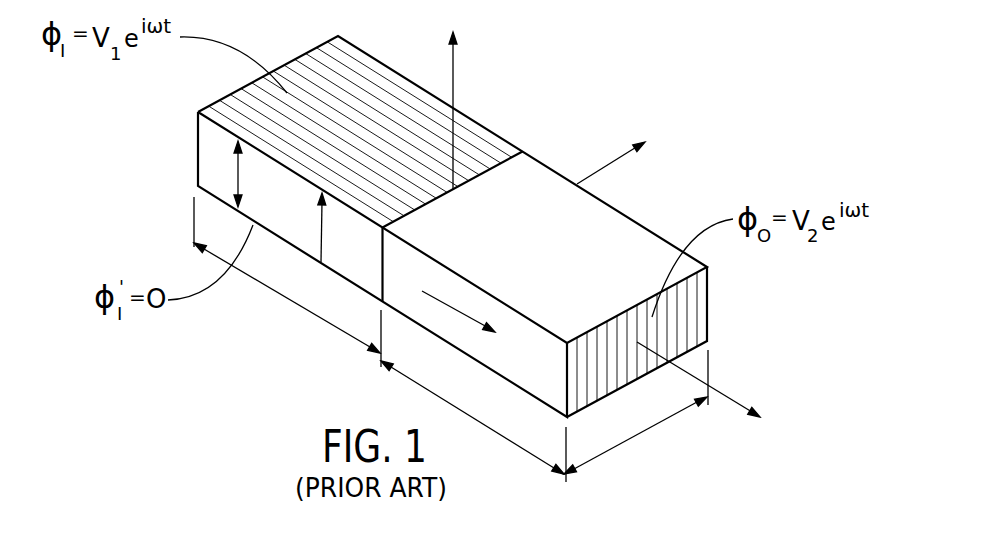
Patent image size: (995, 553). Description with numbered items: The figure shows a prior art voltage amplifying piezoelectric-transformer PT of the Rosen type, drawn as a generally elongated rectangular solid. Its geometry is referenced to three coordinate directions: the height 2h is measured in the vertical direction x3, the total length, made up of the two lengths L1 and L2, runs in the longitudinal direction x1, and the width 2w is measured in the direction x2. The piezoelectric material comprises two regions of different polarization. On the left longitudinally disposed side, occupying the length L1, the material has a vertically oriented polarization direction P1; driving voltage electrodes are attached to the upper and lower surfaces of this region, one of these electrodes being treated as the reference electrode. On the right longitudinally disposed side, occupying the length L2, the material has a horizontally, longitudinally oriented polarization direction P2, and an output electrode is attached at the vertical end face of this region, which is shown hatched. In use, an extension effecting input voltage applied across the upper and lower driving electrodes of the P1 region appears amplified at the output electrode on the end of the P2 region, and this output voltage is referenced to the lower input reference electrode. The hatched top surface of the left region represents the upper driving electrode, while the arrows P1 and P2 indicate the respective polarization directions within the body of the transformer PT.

The piezoelectric-transformer PT is at (595, 75).
The x1 direction x1 is at (709, 401).
The x2 direction x2 is at (627, 156).
The x3 direction x3 is at (464, 102).
The polarization direction P1 is at (336, 227).
The polarization direction P2 is at (474, 331).
The height 2h is at (222, 174).
The length l1 L1 is at (287, 282).
The length l2 L2 is at (473, 421).
The width 2w is at (636, 412).